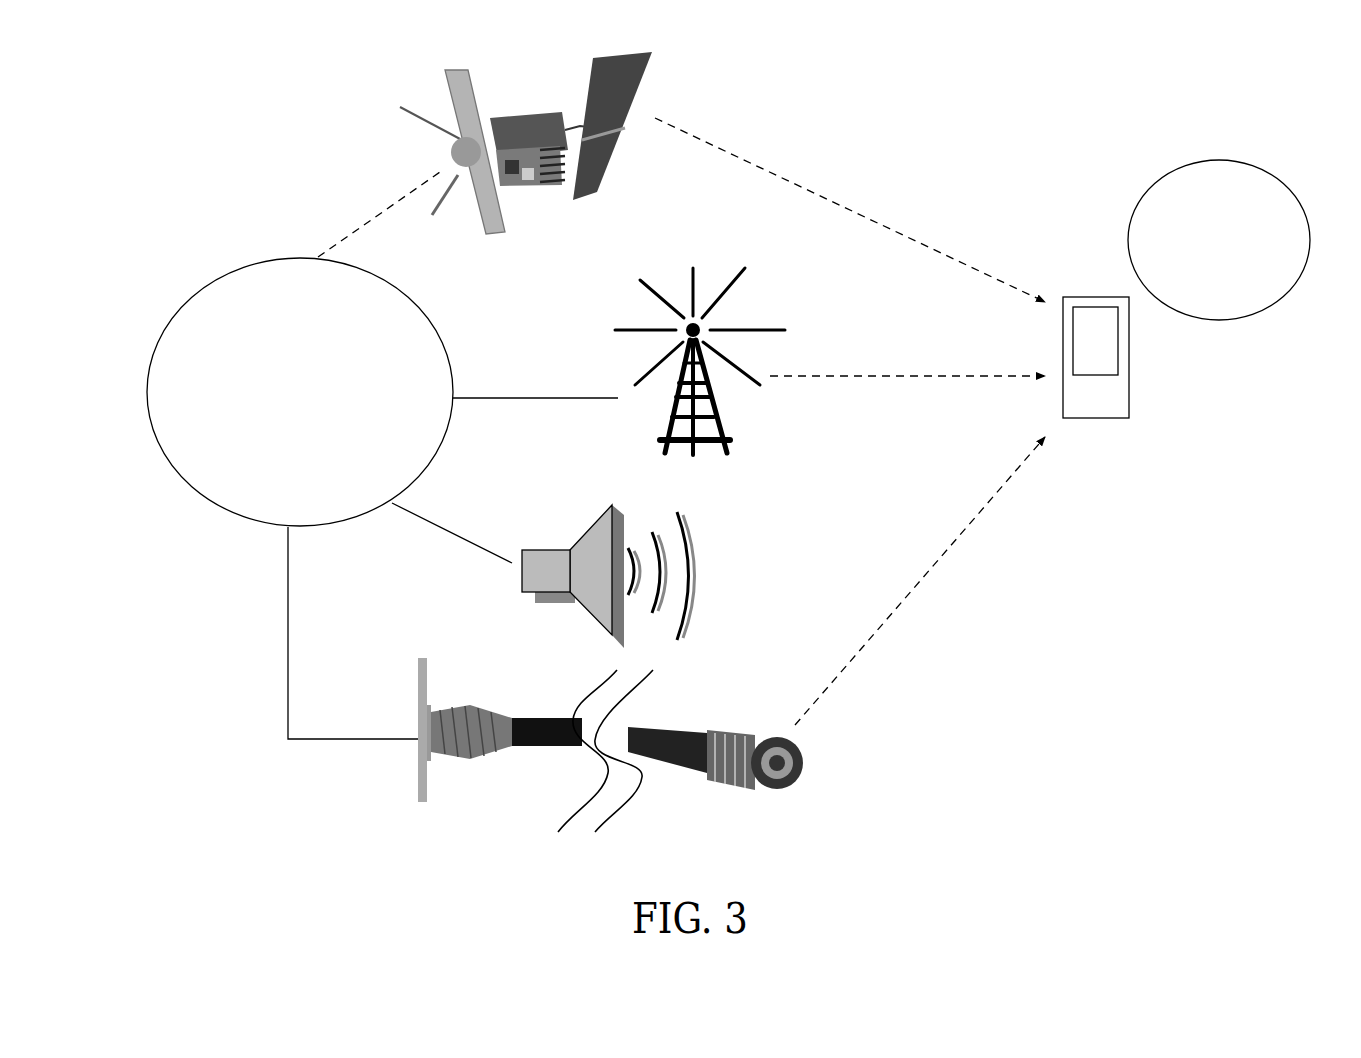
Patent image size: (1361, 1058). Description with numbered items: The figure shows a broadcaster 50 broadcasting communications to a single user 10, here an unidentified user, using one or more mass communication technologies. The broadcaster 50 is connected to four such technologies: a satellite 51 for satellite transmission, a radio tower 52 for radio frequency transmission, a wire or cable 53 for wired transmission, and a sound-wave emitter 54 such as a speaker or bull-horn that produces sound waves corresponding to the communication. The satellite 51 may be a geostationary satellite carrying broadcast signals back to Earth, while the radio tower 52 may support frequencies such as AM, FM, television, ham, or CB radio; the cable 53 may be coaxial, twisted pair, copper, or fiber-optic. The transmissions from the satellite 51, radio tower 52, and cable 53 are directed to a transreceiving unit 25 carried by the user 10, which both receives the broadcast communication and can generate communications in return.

The user 10 is at (1165, 178).
The transreceiving unit 25 is at (1095, 420).
The broadcaster 50 is at (192, 295).
The satellite 51 is at (653, 93).
The radio tower 52 is at (783, 353).
The wire or cable 53 is at (663, 718).
The sound-wave emitter 54 is at (533, 548).